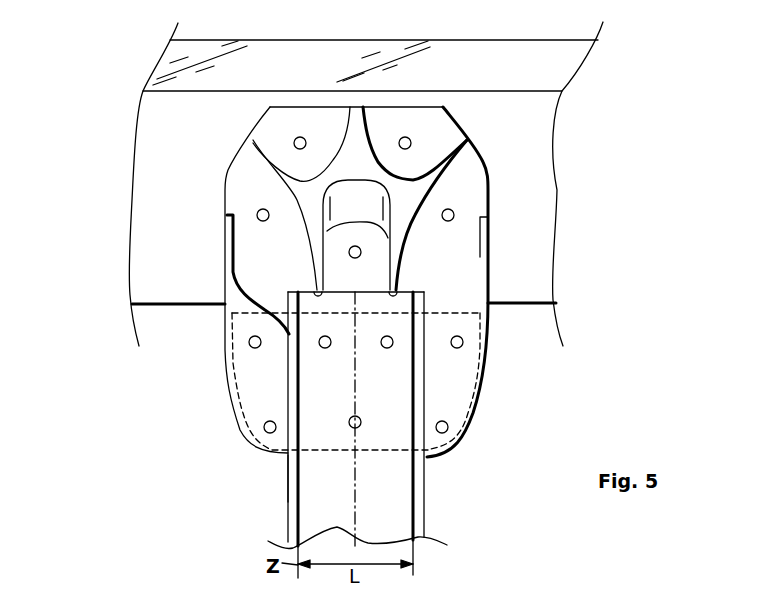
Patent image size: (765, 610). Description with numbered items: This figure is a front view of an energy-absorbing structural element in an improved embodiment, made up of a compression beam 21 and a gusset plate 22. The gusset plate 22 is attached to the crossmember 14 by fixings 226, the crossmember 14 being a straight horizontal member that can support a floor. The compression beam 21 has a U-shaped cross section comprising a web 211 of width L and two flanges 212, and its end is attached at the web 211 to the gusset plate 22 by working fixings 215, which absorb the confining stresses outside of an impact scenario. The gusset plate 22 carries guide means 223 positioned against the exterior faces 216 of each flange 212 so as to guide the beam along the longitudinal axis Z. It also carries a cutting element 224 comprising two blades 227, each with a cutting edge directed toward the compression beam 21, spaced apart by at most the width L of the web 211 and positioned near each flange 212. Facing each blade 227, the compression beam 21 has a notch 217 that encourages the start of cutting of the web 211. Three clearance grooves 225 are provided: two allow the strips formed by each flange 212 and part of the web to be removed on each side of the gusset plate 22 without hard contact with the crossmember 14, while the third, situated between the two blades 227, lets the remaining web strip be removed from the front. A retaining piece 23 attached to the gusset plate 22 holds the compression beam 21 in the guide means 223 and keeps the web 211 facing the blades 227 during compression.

The crossmember 14 is at (533, 57).
The gusset plate 22 is at (213, 200).
The compression beam 21 is at (448, 482).
The retaining piece 23 is at (277, 413).
The web 211 is at (307, 517).
The flanges 212 is at (423, 518).
The working fixings 215 is at (360, 420).
The exterior faces 216 is at (287, 502).
The notch 217 is at (313, 294).
The guide means 223 is at (255, 387).
The cutting element 224 is at (400, 190).
The clearance grooves 225 is at (313, 290).
The fixings 226 is at (294, 143).
The blades 227 is at (313, 292).